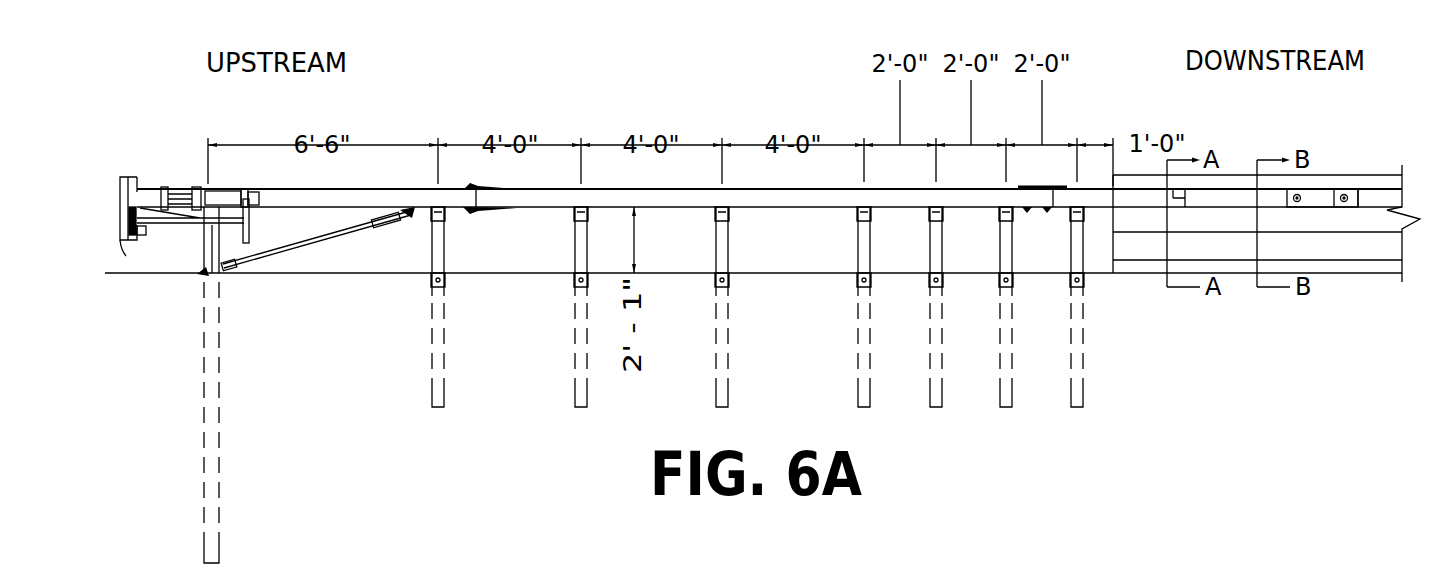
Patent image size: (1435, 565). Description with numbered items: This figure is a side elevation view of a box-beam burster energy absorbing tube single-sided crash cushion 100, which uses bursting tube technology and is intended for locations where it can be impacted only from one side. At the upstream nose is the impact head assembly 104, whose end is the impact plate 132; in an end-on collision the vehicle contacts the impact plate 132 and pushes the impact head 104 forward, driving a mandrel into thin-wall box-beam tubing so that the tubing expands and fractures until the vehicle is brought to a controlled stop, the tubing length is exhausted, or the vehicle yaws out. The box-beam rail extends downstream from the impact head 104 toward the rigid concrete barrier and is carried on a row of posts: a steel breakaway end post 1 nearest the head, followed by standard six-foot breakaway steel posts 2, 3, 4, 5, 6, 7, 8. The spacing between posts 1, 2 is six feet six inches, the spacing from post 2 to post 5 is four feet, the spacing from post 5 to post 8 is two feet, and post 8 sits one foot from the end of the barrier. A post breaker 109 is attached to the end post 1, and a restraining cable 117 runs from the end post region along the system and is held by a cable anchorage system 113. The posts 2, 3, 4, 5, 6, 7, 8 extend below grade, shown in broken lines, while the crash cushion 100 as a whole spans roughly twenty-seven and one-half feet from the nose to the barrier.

The breakaway end post 1 is at (200, 274).
The breakaway post 2 is at (445, 257).
The breakaway post 3 is at (573, 257).
The breakaway post 4 is at (717, 257).
The breakaway post 5 is at (858, 255).
The breakaway post 6 is at (928, 255).
The breakaway post 7 is at (999, 255).
The breakaway post 8 is at (1070, 255).
The single-sided crash cushion 100 is at (767, 95).
The impact head assembly 104 is at (129, 152).
The post breaker 109 is at (253, 250).
The cable anchorage system 113 is at (323, 237).
The restraining cable 117 is at (250, 225).
The impact plate 132 is at (155, 225).